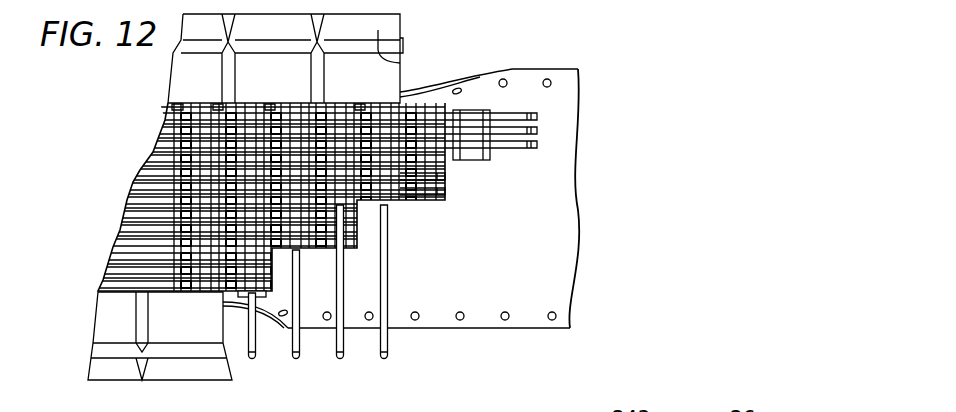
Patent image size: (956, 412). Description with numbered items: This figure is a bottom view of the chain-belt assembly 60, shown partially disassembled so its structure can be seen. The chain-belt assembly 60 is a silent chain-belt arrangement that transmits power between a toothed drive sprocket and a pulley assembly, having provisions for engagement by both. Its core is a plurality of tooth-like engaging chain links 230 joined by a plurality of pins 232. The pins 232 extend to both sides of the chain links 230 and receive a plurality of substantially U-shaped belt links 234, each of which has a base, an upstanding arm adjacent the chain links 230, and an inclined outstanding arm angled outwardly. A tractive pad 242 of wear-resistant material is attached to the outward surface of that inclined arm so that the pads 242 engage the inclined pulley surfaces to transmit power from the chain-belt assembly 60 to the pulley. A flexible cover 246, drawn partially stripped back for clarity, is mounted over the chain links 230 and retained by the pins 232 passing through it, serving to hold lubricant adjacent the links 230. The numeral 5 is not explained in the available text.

The connector housing 5 is at (299, 61).
The tractive pad 242 is at (400, 62).
The chain-belt assembly 60 is at (585, 175).
The flexible cover 246 is at (563, 257).
The chain link 230 is at (528, 153).
The pin 232 is at (387, 233).
The belt link 234 is at (207, 323).